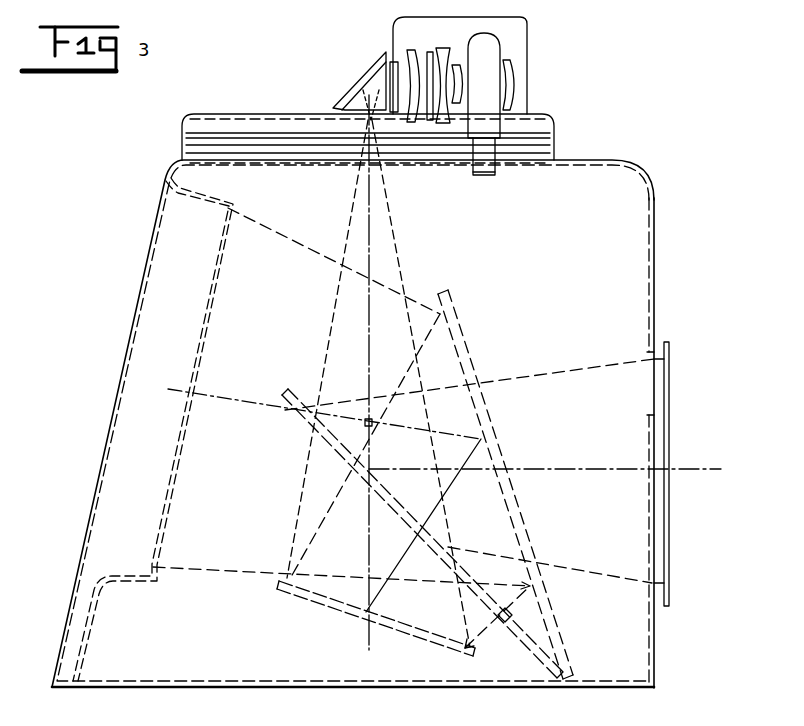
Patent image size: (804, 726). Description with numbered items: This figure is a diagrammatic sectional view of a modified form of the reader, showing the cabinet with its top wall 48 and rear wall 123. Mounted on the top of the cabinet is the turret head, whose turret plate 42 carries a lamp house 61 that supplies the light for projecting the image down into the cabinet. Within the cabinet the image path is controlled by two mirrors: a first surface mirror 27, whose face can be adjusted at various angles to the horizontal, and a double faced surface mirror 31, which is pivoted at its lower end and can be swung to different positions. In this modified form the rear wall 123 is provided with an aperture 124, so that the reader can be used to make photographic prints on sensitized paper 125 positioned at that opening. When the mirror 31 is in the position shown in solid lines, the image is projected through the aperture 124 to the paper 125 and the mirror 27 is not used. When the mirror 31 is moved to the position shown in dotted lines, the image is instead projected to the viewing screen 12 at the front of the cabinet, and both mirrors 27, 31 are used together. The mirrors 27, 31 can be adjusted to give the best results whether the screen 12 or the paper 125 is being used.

The viewing screen 12 is at (200, 350).
The first surface mirror 27 is at (418, 637).
The double faced surface mirror 31 is at (434, 543).
The turret plate 42 is at (556, 113).
The top wall 48 is at (614, 161).
The lamp house 61 is at (397, 20).
The rear wall 123 is at (658, 259).
The aperture 124 is at (647, 418).
The sensitized paper 125 is at (672, 440).